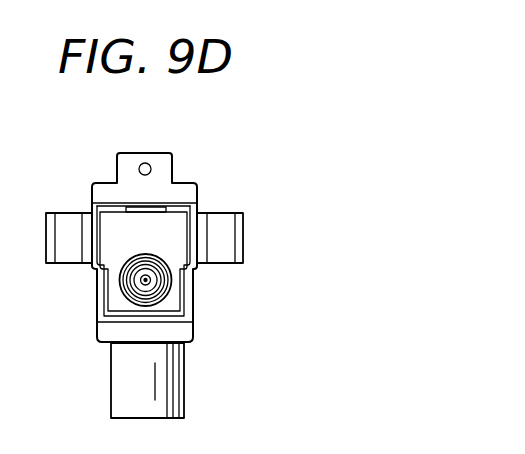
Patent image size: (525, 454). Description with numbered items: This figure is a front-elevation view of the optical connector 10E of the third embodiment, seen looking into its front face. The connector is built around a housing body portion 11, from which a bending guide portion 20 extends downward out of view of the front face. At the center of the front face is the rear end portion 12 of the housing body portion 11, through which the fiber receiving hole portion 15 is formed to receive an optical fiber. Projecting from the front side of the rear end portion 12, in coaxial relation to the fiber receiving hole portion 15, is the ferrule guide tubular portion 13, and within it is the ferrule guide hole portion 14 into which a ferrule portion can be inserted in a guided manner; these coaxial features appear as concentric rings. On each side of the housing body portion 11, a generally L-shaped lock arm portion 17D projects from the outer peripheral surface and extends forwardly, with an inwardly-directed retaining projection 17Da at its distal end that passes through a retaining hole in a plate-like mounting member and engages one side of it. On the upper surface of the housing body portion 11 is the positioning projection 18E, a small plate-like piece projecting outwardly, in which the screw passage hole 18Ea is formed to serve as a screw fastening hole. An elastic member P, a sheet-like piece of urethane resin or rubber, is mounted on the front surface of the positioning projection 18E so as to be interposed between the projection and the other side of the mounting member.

The optical connector 10E is at (197, 139).
The housing body portion 11 is at (195, 318).
The rear end portion 12 is at (177, 292).
The ferrule guide tubular portion 13 is at (120, 272).
The ferrule guide hole portion 14 is at (128, 287).
The fiber receiving hole portion 15 is at (145, 283).
The lock arm portion 17D is at (71, 214).
The retaining projection 17Da is at (62, 220).
The positioning projection 18E is at (178, 179).
The screw passage hole 18Ea is at (152, 165).
The bending guide portion 20 is at (180, 397).
The elastic member P is at (191, 187).